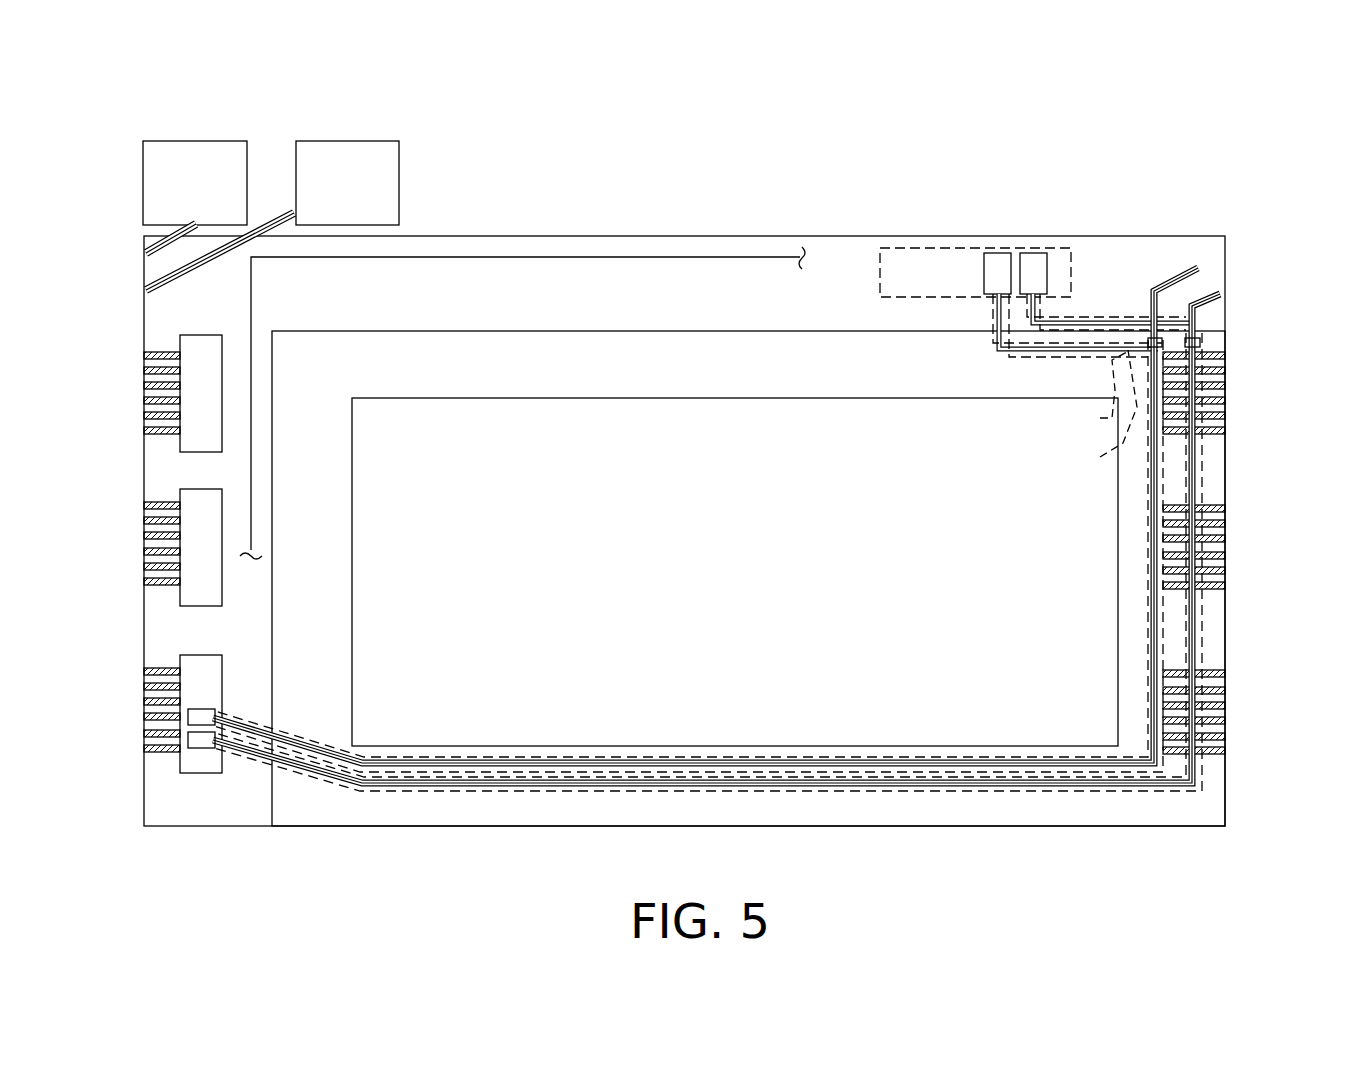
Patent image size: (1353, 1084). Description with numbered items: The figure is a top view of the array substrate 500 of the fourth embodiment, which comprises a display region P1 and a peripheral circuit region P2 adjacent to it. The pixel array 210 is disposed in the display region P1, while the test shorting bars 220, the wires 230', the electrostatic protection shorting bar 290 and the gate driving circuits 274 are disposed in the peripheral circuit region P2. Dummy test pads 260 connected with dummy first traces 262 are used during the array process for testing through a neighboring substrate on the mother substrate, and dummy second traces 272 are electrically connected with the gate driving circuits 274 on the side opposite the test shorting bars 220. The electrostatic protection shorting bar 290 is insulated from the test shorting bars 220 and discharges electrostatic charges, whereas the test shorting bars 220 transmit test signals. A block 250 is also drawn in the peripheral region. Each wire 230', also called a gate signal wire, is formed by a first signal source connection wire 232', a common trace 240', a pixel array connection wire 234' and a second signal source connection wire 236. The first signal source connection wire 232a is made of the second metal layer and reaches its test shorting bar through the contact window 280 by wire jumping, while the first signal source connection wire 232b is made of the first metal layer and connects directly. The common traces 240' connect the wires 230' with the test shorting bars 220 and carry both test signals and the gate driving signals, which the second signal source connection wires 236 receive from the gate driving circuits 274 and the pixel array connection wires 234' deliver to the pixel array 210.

The pixel array 210 is at (452, 712).
The test shorting bars 220 is at (1200, 270).
The wires 230' is at (946, 560).
The first signal source connection wires 232' is at (1013, 440).
The first signal source connection wire 232a is at (1089, 411).
The first signal source connection wire 232b is at (1084, 395).
The pixel array connection wires 234' is at (1057, 720).
The second signal source connection wires 236 is at (326, 746).
The common traces 240' is at (1104, 553).
The driving circuit 250 is at (996, 258).
The dummy test pads 260 is at (372, 150).
The dummy first traces 262 is at (158, 235).
The dummy second traces 272 is at (105, 780).
The gate driving circuits 274 is at (192, 346).
The contact window 280 is at (1197, 325).
The electrostatic protection shorting bar 290 is at (638, 257).
The array substrate 500 is at (1305, 892).
The display region P1 is at (428, 690).
The peripheral circuit region P2 is at (165, 783).